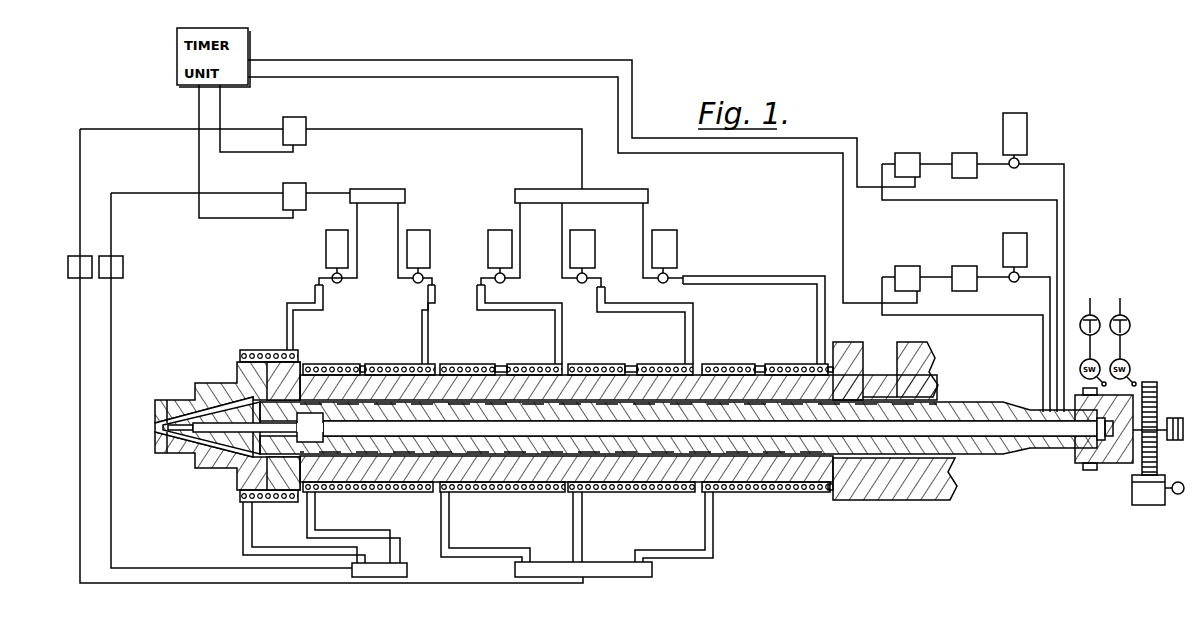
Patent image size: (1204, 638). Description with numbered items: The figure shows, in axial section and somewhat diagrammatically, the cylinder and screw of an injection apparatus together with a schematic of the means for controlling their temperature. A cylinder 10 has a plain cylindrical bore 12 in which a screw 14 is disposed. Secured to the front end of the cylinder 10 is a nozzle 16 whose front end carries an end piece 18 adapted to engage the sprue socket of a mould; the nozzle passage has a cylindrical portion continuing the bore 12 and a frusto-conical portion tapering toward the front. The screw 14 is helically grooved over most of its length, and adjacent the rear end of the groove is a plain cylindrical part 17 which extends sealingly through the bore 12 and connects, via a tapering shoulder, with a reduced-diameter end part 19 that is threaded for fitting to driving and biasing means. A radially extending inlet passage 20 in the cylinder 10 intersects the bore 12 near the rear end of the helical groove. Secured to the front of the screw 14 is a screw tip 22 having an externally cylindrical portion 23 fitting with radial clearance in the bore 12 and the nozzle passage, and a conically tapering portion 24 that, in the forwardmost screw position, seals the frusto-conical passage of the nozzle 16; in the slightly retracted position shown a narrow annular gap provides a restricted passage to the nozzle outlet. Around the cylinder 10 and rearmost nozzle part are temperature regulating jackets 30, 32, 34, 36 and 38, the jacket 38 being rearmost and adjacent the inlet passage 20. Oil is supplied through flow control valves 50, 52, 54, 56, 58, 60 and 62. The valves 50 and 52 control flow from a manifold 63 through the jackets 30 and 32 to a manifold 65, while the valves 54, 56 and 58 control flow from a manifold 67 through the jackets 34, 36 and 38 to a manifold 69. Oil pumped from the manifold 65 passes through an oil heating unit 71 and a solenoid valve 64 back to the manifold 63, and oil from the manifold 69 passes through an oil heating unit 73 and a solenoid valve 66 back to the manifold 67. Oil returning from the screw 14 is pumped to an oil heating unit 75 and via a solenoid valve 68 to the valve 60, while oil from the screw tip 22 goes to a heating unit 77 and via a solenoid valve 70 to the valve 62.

The cylinder 10 is at (765, 488).
The bore 12 is at (793, 448).
The screw 14 is at (718, 410).
The nozzle 16 is at (212, 388).
The plain cylindrical part 17 is at (947, 448).
The end piece 18 is at (160, 398).
The end part 19 is at (1070, 445).
The inlet passage 20 is at (870, 357).
The screw tip 22 is at (233, 443).
The externally cylindrical portion 23 is at (282, 447).
The conically tapering portion 24 is at (200, 437).
The jacket 30 is at (258, 350).
The jacket 32 is at (388, 364).
The jacket 34 is at (523, 364).
The jacket 36 is at (612, 364).
The jacket 38 is at (788, 364).
The flow control valve 50 is at (330, 258).
The flow control valve 52 is at (414, 246).
The flow control valve 54 is at (497, 243).
The flow control valve 56 is at (582, 252).
The flow control valve 58 is at (668, 250).
The flow control valve 60 is at (1015, 140).
The flow control valve 62 is at (1010, 247).
The manifold 63 is at (381, 193).
The solenoid valve 64 is at (300, 194).
The manifold 65 is at (372, 567).
The solenoid valve 66 is at (298, 128).
The manifold 67 is at (610, 195).
The solenoid valve 68 is at (963, 163).
The manifold 69 is at (548, 570).
The solenoid valve 70 is at (962, 273).
The oil heating unit 71 is at (124, 265).
The oil heating unit 73 is at (80, 266).
The oil heating unit 75 is at (906, 163).
The heating unit 77 is at (906, 277).